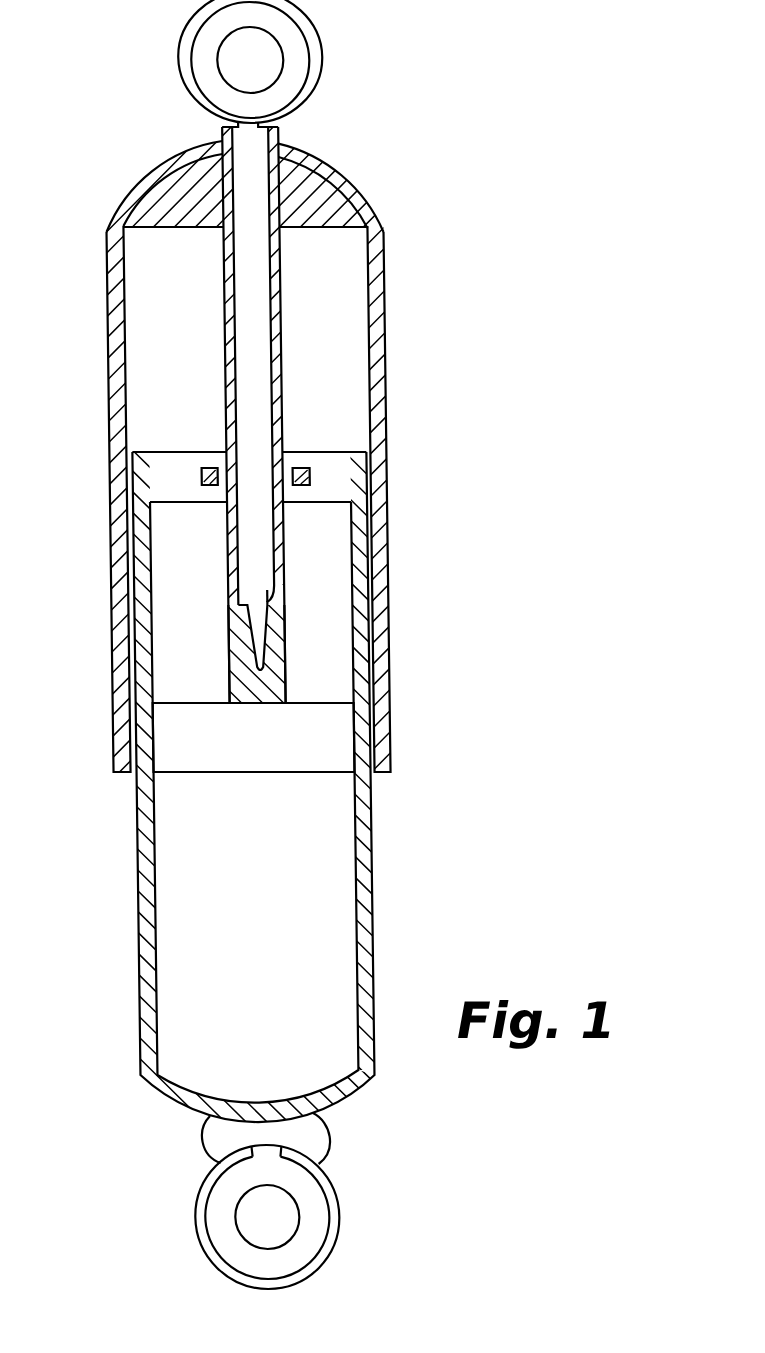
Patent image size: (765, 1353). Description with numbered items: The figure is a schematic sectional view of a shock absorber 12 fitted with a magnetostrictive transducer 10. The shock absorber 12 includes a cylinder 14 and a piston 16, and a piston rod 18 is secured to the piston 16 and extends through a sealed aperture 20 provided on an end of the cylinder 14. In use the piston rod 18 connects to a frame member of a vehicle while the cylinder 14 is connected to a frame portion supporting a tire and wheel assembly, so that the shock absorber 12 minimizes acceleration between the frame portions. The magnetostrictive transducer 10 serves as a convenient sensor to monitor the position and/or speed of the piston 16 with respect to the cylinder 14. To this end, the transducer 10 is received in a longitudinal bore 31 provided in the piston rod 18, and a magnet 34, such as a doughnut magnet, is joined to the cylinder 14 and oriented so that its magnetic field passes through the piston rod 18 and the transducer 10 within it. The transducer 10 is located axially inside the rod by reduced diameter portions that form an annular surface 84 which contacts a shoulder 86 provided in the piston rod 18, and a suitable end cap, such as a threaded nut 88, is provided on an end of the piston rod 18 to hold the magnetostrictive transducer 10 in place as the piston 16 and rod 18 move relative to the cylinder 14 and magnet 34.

The shock absorber 12 is at (458, 235).
The cylinder 14 is at (371, 838).
The piston 16 is at (327, 723).
The piston rod 18 is at (285, 652).
The sealed aperture 20 is at (293, 466).
The magnet 34 is at (204, 467).
The magnetostrictive transducer 10 is at (252, 373).
The longitudinal bore 31 is at (278, 340).
The threaded nut 88 is at (253, 161).
The annular surface 84 is at (232, 618).
The shoulder 86 is at (266, 590).